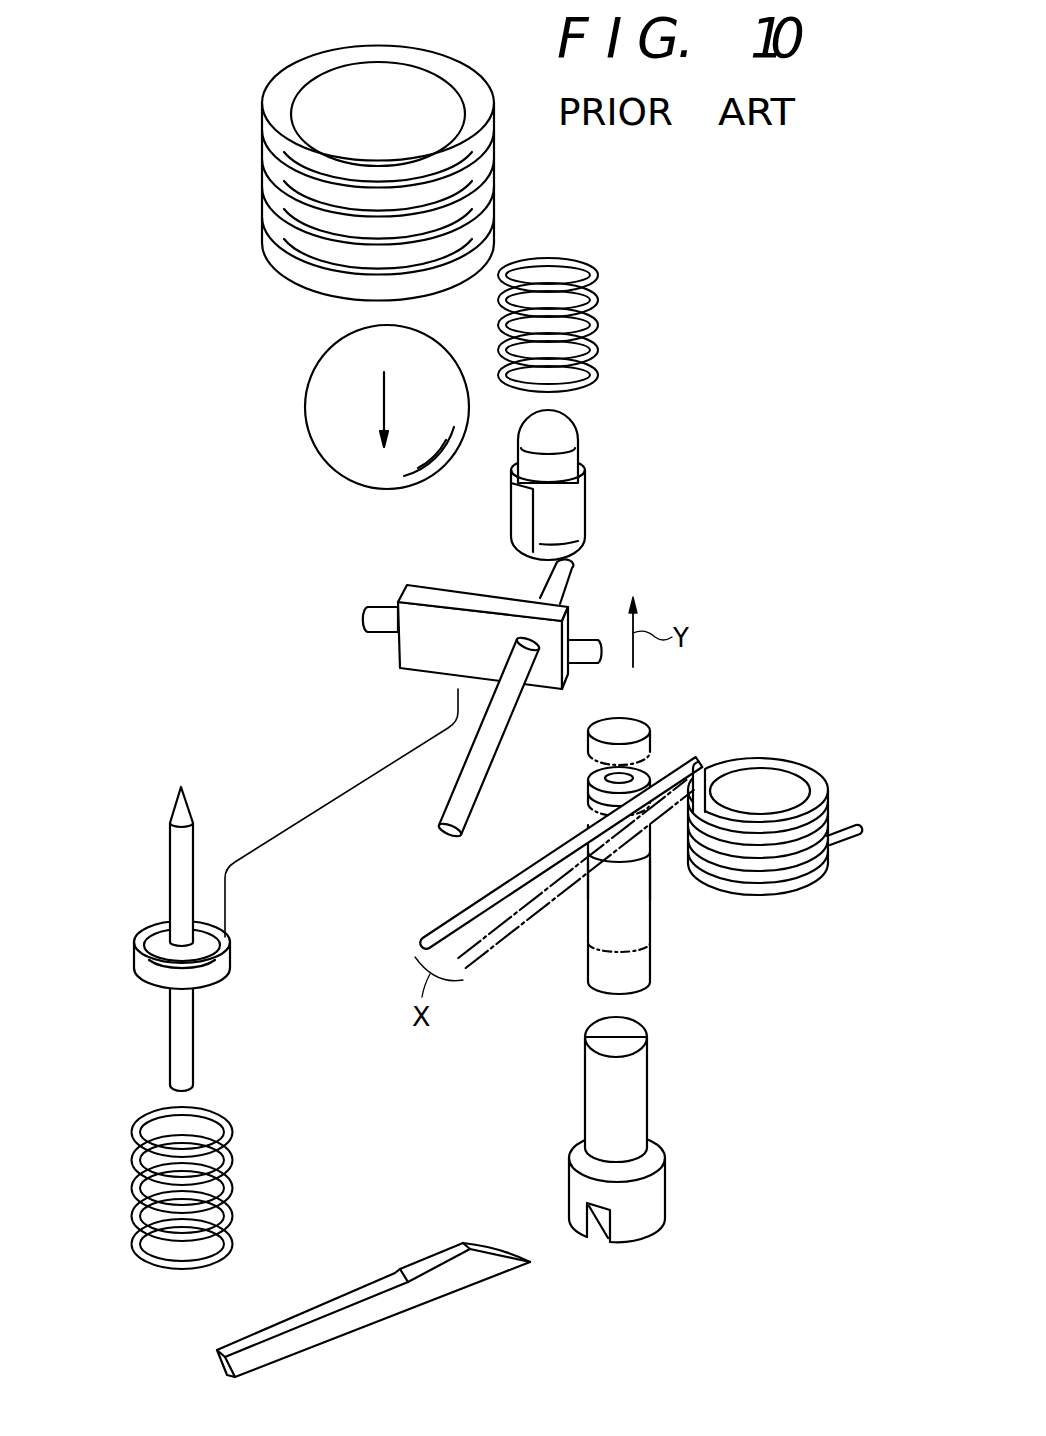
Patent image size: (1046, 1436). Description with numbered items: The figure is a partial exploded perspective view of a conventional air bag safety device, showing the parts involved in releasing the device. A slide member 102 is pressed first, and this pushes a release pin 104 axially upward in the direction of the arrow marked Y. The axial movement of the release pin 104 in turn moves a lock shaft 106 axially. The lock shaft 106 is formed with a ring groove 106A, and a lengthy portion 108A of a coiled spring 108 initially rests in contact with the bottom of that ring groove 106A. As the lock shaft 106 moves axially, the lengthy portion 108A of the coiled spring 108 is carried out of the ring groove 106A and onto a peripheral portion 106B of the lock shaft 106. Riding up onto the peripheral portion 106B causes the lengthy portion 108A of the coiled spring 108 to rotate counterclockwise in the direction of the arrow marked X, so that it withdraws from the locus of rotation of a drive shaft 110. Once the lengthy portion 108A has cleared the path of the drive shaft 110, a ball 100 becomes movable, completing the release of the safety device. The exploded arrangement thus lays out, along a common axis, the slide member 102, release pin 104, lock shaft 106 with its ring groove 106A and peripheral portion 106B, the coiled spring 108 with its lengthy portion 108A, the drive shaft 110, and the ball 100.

The ball 100 is at (306, 398).
The slide member 102 is at (317, 1308).
The release pin 104 is at (648, 1115).
The lock shaft 106 is at (657, 978).
The ring groove 106A is at (653, 845).
The peripheral portion 106B is at (595, 908).
The coiled spring 108 is at (813, 767).
The lengthy portion 108A is at (538, 870).
The drive shaft 110 is at (457, 792).